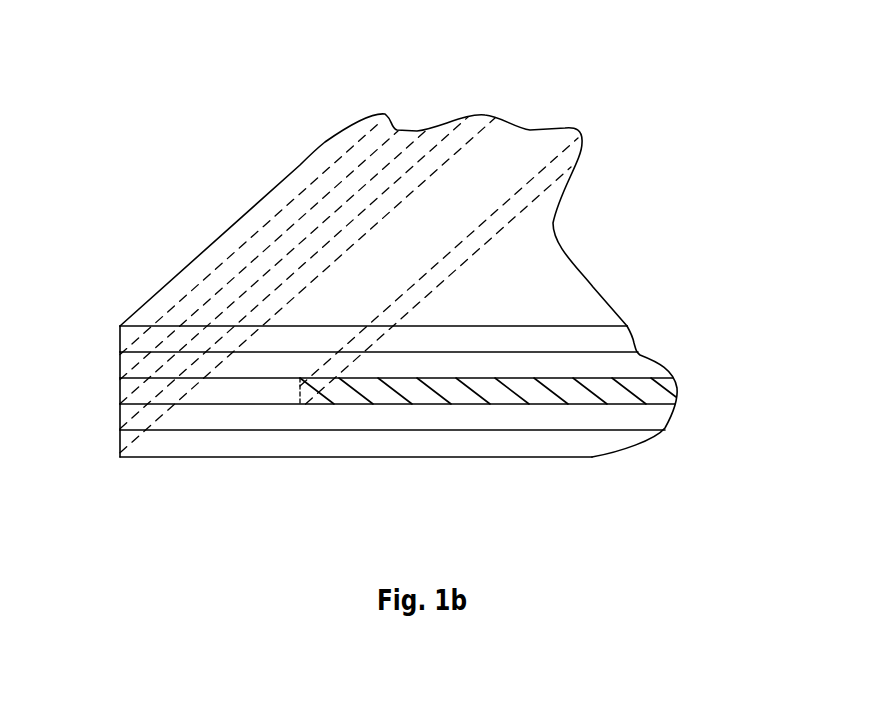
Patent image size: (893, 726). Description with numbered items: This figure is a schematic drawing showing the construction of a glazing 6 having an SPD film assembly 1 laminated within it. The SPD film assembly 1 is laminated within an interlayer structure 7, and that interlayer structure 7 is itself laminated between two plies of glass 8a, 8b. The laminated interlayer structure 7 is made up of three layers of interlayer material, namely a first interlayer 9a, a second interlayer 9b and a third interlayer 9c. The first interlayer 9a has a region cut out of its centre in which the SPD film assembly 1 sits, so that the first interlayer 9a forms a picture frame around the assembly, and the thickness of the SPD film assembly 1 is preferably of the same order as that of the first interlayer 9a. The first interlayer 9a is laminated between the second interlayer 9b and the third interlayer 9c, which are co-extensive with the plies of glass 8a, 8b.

The SPD film assembly 1 is at (698, 392).
The glazing 6 is at (628, 157).
The interlayer structure 7 is at (92, 358).
The ply of glass 8a is at (125, 335).
The ply of glass 8b is at (147, 445).
The first interlayer 9a is at (252, 390).
The second interlayer 9b is at (638, 362).
The third interlayer 9c is at (660, 413).